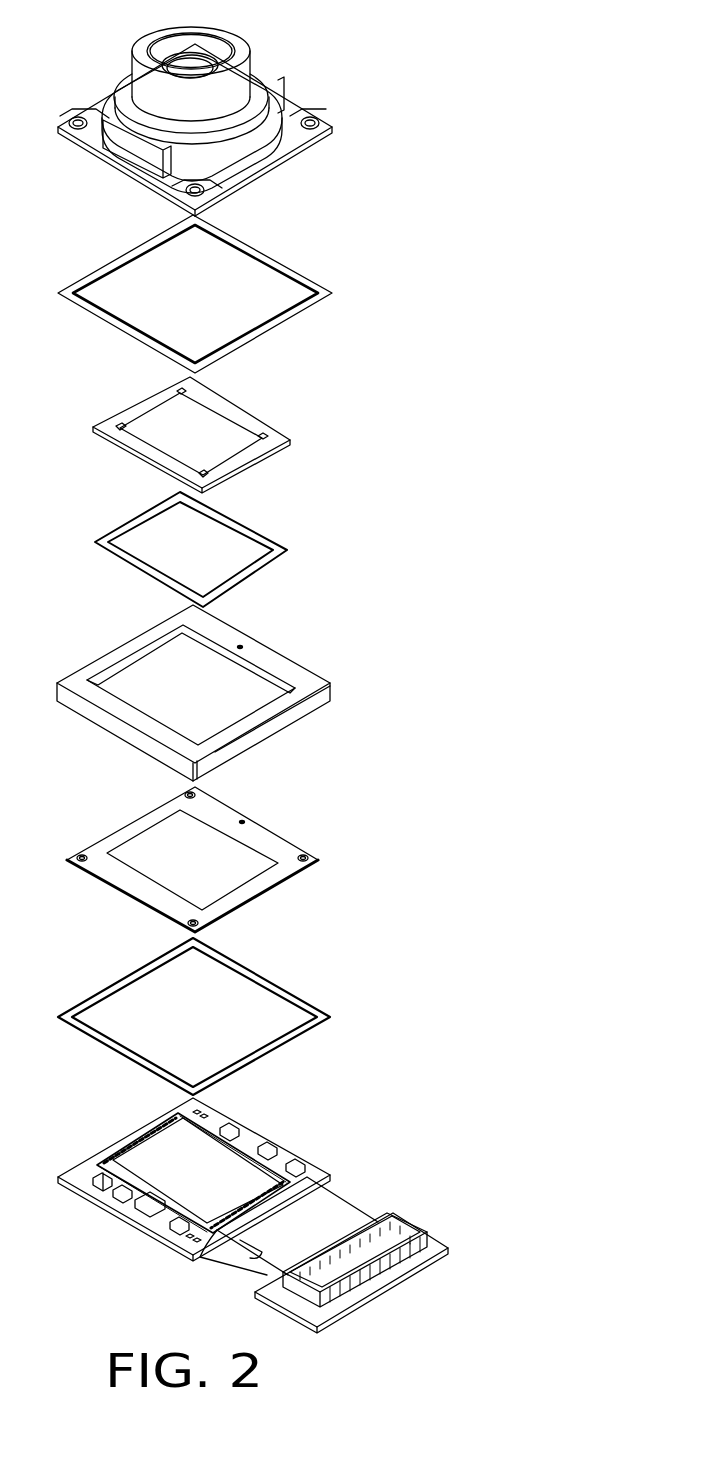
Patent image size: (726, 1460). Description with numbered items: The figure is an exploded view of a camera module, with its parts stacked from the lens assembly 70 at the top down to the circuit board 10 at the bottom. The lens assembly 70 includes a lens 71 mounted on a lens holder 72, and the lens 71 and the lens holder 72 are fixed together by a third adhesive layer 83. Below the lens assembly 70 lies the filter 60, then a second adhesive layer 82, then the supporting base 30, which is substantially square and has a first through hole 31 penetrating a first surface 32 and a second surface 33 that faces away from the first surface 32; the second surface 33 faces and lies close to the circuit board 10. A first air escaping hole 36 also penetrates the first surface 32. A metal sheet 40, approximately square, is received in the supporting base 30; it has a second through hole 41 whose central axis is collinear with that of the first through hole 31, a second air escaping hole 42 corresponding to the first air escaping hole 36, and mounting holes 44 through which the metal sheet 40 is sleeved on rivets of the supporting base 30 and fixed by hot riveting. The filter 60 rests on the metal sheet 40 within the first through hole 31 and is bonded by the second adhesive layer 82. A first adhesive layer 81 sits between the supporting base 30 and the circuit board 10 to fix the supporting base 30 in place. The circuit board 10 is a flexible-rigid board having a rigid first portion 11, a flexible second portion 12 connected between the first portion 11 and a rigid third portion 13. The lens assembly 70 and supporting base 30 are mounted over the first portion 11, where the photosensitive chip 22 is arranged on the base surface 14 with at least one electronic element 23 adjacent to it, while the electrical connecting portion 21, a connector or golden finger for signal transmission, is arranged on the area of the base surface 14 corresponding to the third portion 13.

The circuit board 10 is at (152, 1324).
The first portion 11 is at (147, 1220).
The second portion 12 is at (257, 1247).
The third portion 13 is at (260, 1285).
The base surface 14 is at (330, 1203).
The electrical connecting portion 21 is at (403, 1220).
The photosensitive chip 22 is at (198, 1160).
The electronic element 23 is at (270, 1148).
The supporting base 30 is at (318, 662).
The first through hole 31 is at (253, 705).
The first surface 32 is at (130, 645).
The second surface 33 is at (252, 753).
The first air escaping hole 36 is at (243, 642).
The metal sheet 40 is at (250, 888).
The second through hole 41 is at (152, 838).
The second air escaping hole 42 is at (245, 821).
The mounting holes 44 is at (307, 858).
The filter 60 is at (237, 420).
The lens assembly 70 is at (344, 12).
The lens 71 is at (240, 95).
The lens holder 72 is at (293, 122).
The first adhesive layer 81 is at (272, 985).
The second adhesive layer 82 is at (255, 537).
The third adhesive layer 83 is at (287, 272).